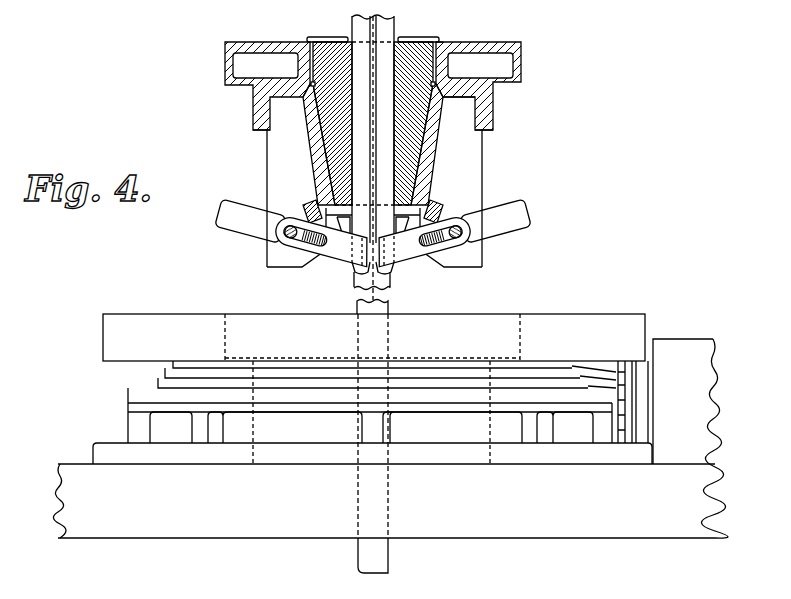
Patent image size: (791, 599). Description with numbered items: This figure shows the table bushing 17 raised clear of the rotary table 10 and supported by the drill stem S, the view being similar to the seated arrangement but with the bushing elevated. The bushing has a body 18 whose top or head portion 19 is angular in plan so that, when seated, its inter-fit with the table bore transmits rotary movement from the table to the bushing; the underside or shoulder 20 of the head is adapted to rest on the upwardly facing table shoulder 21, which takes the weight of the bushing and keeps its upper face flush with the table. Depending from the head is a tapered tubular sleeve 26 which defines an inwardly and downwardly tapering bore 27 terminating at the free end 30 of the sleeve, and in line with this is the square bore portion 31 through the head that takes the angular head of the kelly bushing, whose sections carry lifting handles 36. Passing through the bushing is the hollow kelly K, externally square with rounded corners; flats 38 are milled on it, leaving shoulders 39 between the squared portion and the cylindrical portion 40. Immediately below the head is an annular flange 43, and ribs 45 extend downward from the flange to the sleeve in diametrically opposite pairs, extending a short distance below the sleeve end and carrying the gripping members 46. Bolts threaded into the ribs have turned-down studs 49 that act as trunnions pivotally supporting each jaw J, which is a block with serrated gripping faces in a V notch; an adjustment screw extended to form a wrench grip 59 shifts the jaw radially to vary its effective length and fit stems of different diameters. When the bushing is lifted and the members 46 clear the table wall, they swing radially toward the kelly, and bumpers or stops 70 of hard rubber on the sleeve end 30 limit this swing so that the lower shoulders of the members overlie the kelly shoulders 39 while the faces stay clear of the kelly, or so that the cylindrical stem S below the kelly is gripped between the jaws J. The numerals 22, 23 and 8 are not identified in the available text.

The rotary table 10 is at (615, 314).
The table bushing 17 is at (507, 40).
The body 18 is at (440, 98).
The head portion 19 is at (226, 66).
The shoulder 20 is at (248, 86).
The table shoulder 21 is at (505, 361).
The opening 22 is at (243, 62).
The seal cap 23 is at (286, 43).
The sleeve 26 is at (320, 175).
The tapering bore 27 is at (309, 150).
The free end of sleeve 30 is at (436, 197).
The bore portion 31 is at (438, 38).
The lifting handles 36 is at (452, 38).
The flats 38 is at (432, 146).
The kelly shoulders 39 is at (372, 266).
The cylindrical portion 40 is at (357, 302).
The annular flange 43 is at (489, 106).
The ribs 45 is at (267, 168).
The gripping members 46 is at (284, 249).
The studs 49 is at (293, 240).
The wrench grip 59 is at (227, 238).
The bumpers or stops 70 is at (306, 210).
The jaw tip 8 is at (337, 262).
The jaw J is at (322, 268).
The kelly K is at (388, 38).
The drill stem S is at (386, 559).